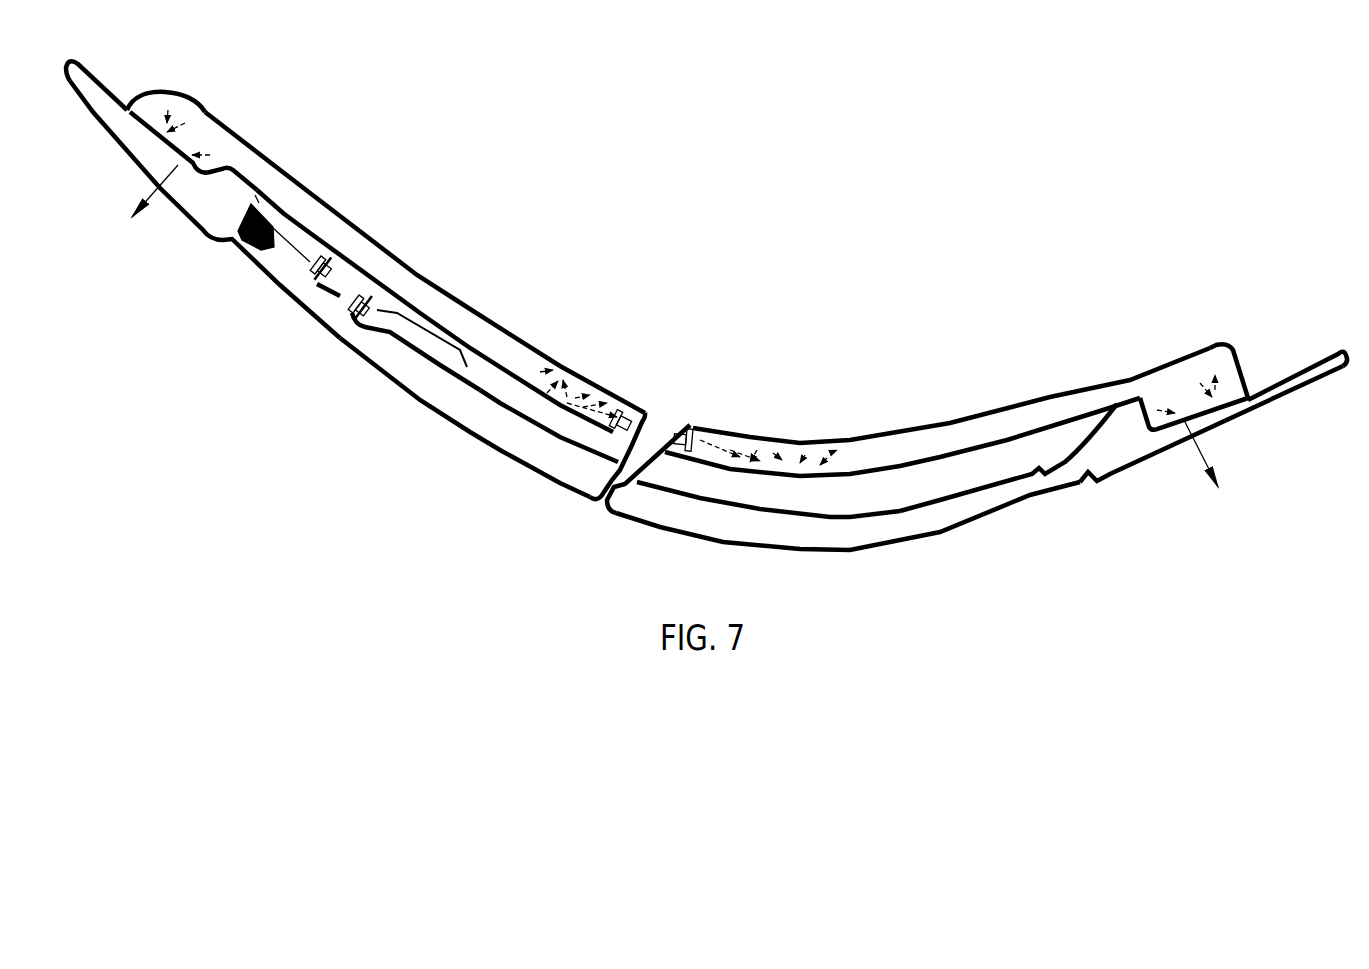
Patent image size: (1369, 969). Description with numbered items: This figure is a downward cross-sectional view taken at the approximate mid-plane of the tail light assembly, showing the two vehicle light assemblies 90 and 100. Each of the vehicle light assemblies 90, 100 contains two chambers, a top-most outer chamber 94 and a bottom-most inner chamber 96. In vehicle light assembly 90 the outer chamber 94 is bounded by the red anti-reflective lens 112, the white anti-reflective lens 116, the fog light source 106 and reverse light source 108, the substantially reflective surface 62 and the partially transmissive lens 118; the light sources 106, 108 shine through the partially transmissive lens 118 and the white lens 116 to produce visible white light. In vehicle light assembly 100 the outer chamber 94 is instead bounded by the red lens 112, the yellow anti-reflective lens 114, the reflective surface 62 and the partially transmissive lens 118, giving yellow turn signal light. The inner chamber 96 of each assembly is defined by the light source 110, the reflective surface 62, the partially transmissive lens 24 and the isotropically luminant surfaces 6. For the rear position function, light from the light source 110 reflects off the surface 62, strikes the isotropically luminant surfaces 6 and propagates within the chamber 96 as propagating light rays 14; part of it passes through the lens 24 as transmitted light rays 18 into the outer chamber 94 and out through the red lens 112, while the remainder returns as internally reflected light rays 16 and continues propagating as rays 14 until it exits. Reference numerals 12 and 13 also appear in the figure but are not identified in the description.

The isotropically luminant surface 6 is at (152, 110).
The flow channel 12 is at (607, 410).
The opening 13 is at (552, 393).
The propagating light rays 14 is at (207, 155).
The internally reflected light rays 16 is at (175, 117).
The transmitted light rays 18 is at (140, 203).
The partially transmissive lens 24 is at (140, 124).
The substantially reflective surface 62 is at (283, 213).
The vehicle light assembly 90 is at (413, 165).
The top-most (outer) chamber 94 is at (433, 384).
The bottom-most (inner) chamber 96 is at (363, 257).
The vehicle light assembly 100 is at (1083, 237).
The fog light source 106 is at (313, 273).
The reverse (backup) light source 108 is at (347, 315).
The light source 110 is at (633, 415).
The red, anti-reflective lens 112 is at (172, 207).
The yellow, anti-reflective lens 114 is at (867, 549).
The white, anti-reflective lens 116 is at (378, 376).
The partially transmissive lens 118 is at (512, 413).